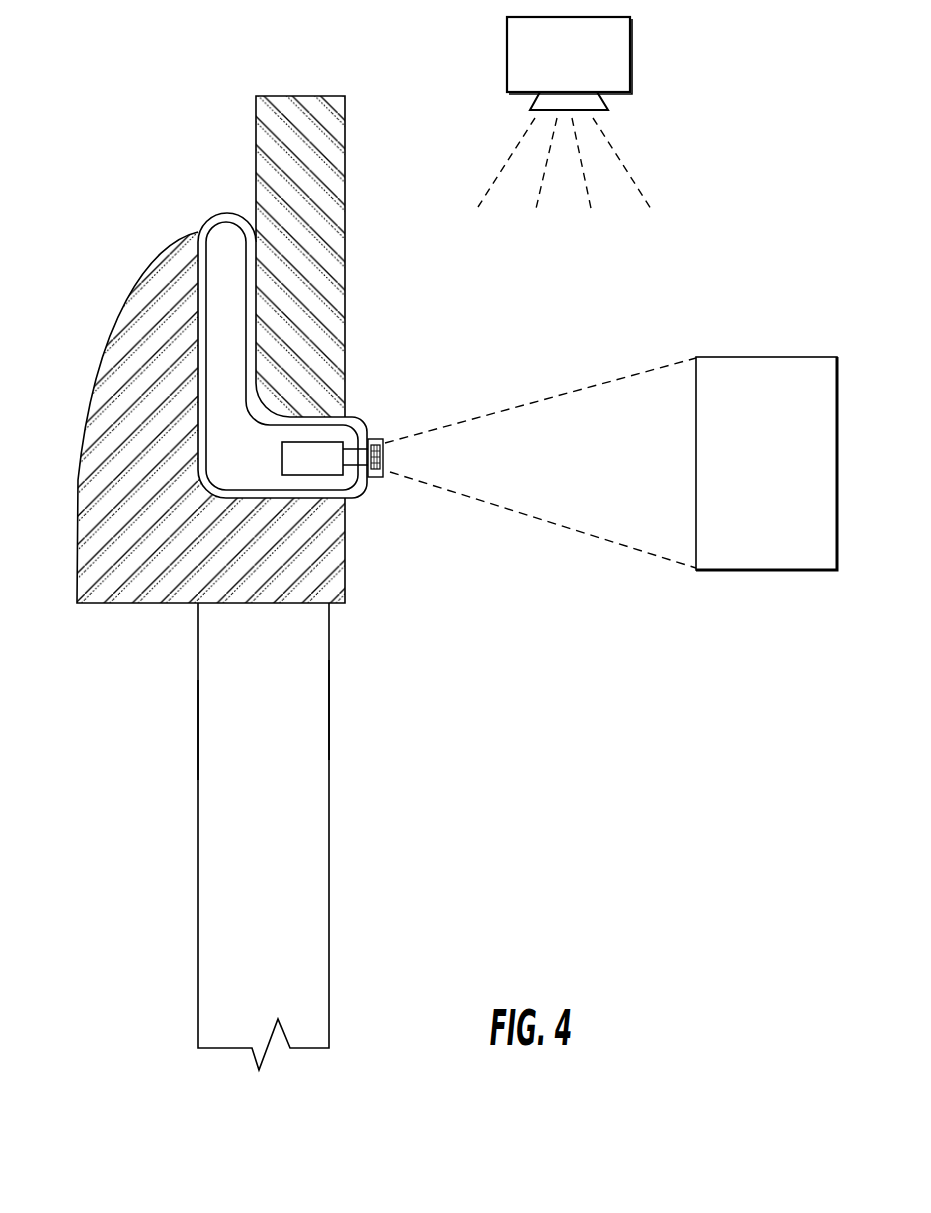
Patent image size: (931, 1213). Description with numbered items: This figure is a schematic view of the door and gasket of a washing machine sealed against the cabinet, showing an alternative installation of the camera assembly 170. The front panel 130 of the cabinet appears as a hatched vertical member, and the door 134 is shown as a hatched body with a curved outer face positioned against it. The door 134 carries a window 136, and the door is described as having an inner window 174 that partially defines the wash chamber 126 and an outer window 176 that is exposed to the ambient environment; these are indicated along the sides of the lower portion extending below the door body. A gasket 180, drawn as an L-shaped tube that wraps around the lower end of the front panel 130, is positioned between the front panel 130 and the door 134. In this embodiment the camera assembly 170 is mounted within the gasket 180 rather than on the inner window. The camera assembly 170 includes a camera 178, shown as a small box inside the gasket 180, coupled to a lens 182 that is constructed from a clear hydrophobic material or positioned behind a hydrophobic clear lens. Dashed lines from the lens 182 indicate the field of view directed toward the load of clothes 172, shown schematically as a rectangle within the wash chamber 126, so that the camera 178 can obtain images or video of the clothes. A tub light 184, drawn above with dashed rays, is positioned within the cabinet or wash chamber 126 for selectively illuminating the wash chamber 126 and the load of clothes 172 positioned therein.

The wash chamber 126 is at (475, 777).
The front panel 130 is at (346, 160).
The door 134 is at (103, 367).
The window 136 is at (277, 777).
The camera assembly 170 is at (412, 400).
The load of clothes 172 is at (748, 467).
The inner window 174 is at (330, 708).
The outer window 176 is at (198, 727).
The camera 178 is at (325, 457).
The gasket 180 is at (348, 412).
The lens 182 is at (386, 448).
The tub light 184 is at (584, 70).